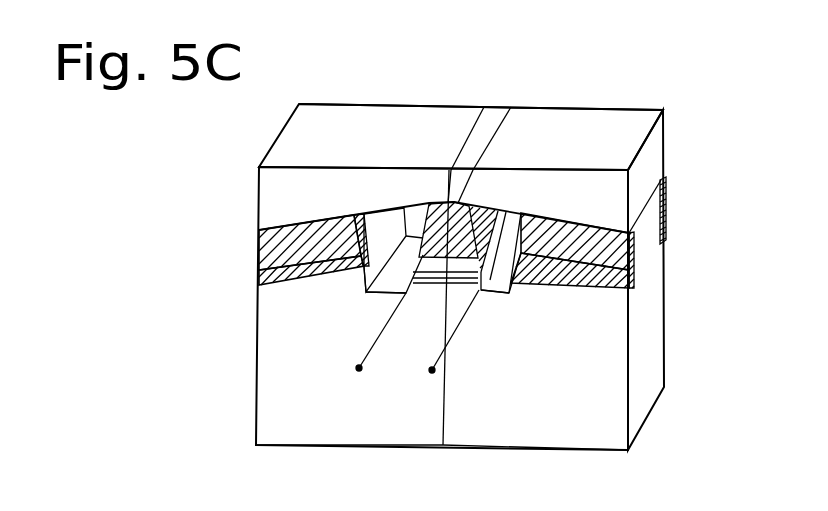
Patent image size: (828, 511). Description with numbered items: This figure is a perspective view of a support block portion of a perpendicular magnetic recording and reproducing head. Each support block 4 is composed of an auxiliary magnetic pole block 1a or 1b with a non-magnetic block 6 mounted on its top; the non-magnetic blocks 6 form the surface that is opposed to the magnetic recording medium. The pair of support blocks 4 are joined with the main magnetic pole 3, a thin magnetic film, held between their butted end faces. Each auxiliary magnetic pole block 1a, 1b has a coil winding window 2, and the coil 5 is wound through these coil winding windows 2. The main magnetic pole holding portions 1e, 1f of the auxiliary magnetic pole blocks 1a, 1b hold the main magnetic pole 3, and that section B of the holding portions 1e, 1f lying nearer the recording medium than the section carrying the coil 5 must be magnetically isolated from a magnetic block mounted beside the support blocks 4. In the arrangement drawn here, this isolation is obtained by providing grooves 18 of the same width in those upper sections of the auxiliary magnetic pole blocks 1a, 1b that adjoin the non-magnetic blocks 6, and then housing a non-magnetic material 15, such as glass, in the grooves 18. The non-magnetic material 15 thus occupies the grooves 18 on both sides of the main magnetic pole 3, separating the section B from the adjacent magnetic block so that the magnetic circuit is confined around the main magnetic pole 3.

The auxiliary magnetic pole block 1a is at (508, 422).
The auxiliary magnetic pole block 1b is at (361, 423).
The main magnetic pole holding portion 1e is at (368, 283).
The main magnetic pole holding portion 1f is at (480, 289).
The coil winding window 2 is at (258, 276).
The main magnetic pole 3 is at (463, 130).
The support block 4 is at (273, 382).
The coil 5 is at (443, 333).
The non-magnetic block 6 is at (288, 133).
The non-magnetic material 15 is at (266, 224).
The groove 18 is at (353, 213).
The section B is at (425, 220).